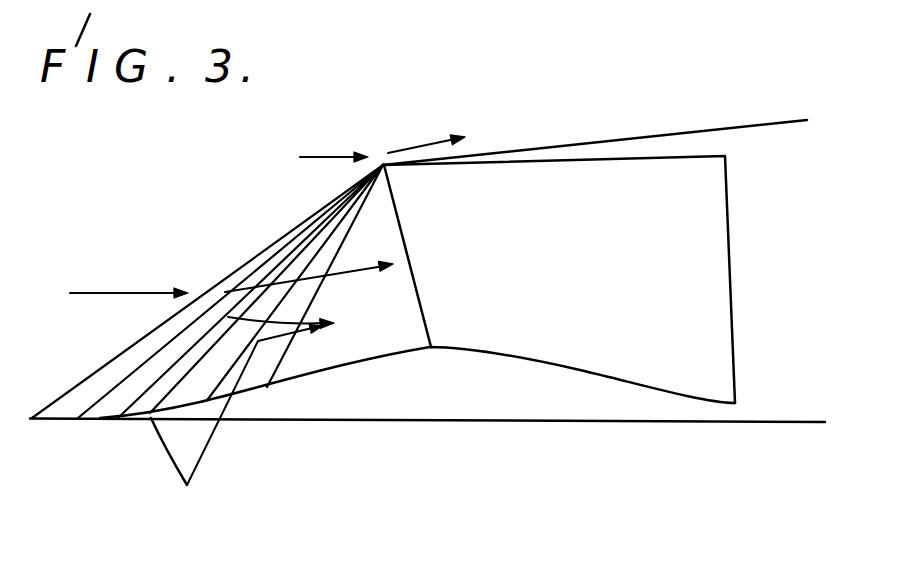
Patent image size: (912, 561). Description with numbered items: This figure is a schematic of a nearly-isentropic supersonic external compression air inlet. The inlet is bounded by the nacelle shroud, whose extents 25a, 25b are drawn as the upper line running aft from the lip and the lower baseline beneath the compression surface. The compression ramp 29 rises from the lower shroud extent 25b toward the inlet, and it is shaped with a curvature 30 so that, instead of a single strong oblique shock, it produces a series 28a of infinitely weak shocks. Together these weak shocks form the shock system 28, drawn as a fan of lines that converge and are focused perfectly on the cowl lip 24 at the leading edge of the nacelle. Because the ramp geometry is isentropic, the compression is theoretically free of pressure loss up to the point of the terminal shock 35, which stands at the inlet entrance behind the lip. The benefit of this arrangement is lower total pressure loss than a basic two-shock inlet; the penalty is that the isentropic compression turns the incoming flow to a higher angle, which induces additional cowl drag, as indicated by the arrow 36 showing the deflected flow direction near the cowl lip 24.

The cowl lip 24 is at (383, 165).
The nacelle shroud extent 25a is at (698, 120).
The nacelle shroud extent 25b is at (599, 423).
The shock system 28 is at (243, 267).
The series of infinitely weak shocks 28a is at (345, 243).
The ramp 29 is at (205, 400).
The curvature 30 is at (194, 405).
The terminal shock 35 is at (412, 268).
The arrow 36 is at (343, 265).